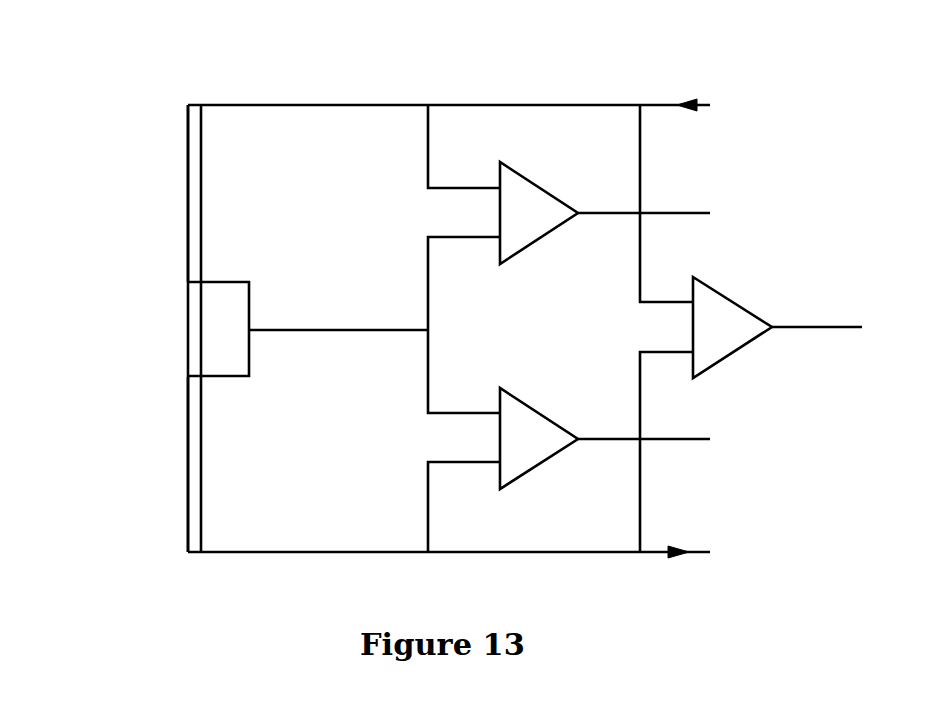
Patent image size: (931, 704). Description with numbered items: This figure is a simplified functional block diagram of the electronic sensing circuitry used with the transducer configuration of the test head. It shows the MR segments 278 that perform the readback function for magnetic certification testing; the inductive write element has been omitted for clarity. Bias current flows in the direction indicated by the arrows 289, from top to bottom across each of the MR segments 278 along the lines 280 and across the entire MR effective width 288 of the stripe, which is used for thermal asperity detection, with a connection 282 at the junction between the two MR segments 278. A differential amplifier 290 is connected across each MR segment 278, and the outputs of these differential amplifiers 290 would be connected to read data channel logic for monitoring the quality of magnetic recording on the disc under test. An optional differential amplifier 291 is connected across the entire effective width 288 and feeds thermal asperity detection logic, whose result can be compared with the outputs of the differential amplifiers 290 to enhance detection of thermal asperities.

The MR segments 278 is at (158, 105).
The signal line 280 is at (449, 316).
The coupler block 282 is at (308, 329).
The MR effective width 288 is at (82, 105).
The arrows 289 is at (687, 100).
The differential amplifier 290 is at (532, 245).
The optional differential amplifier 291 is at (722, 294).